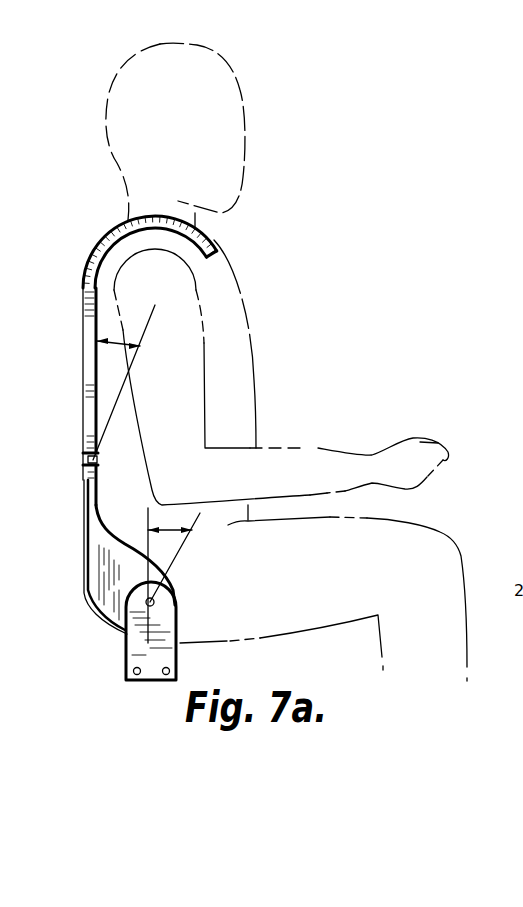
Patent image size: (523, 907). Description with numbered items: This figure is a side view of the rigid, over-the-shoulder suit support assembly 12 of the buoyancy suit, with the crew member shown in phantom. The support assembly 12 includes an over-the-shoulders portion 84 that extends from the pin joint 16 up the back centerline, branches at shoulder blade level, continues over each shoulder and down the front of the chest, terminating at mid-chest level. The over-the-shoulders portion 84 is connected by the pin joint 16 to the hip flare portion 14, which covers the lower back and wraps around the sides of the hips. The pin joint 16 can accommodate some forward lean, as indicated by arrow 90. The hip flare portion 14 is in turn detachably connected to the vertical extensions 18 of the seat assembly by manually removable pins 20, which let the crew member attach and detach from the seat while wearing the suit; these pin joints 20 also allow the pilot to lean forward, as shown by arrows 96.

The rigid suit support assembly 12 is at (70, 508).
The hip flare portion 14 is at (80, 558).
The pin joint 16 is at (85, 459).
The vertical extensions 18 is at (142, 652).
The manually removable pins 20 is at (156, 601).
The over-the-shoulders portion 84 is at (133, 232).
The arrow 90 is at (120, 338).
The arrows 96 is at (170, 527).